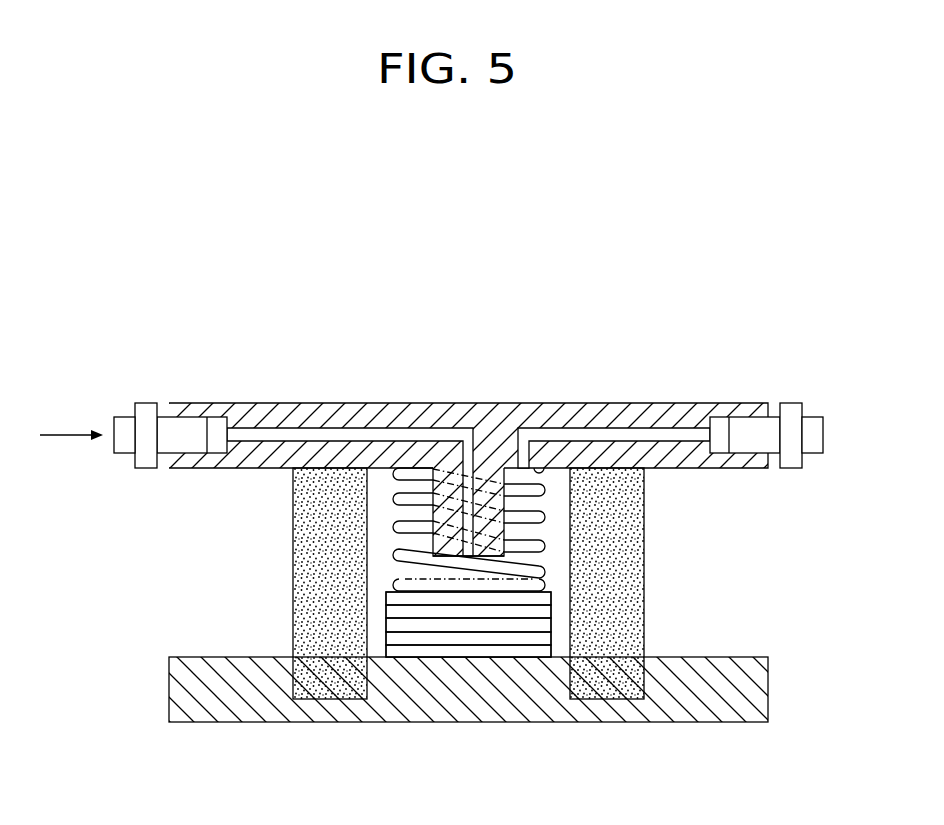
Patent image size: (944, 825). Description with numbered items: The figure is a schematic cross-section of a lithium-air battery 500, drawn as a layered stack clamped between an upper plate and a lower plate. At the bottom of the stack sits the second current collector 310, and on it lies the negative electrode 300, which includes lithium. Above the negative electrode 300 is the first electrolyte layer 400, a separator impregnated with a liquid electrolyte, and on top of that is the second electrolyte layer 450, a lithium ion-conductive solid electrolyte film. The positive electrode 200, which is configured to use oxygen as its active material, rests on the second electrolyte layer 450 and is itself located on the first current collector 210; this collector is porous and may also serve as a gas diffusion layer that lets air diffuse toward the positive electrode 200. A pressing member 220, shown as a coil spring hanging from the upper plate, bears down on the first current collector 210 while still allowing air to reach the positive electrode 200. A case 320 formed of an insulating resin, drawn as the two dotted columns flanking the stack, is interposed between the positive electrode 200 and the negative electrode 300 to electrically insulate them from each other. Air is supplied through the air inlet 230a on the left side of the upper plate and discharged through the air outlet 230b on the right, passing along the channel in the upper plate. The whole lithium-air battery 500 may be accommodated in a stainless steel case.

The lithium-air battery 500 is at (150, 351).
The air inlet 230a is at (127, 447).
The air outlet 230b is at (810, 447).
The pressing member 220 is at (553, 519).
The first current collector 210 is at (553, 601).
The positive electrode 200 is at (553, 612).
The second electrolyte layer 450 is at (553, 624).
The first electrolyte layer 400 is at (553, 637).
The negative electrode 300 is at (553, 650).
The second current collector 310 is at (180, 690).
The case 320 is at (303, 568).